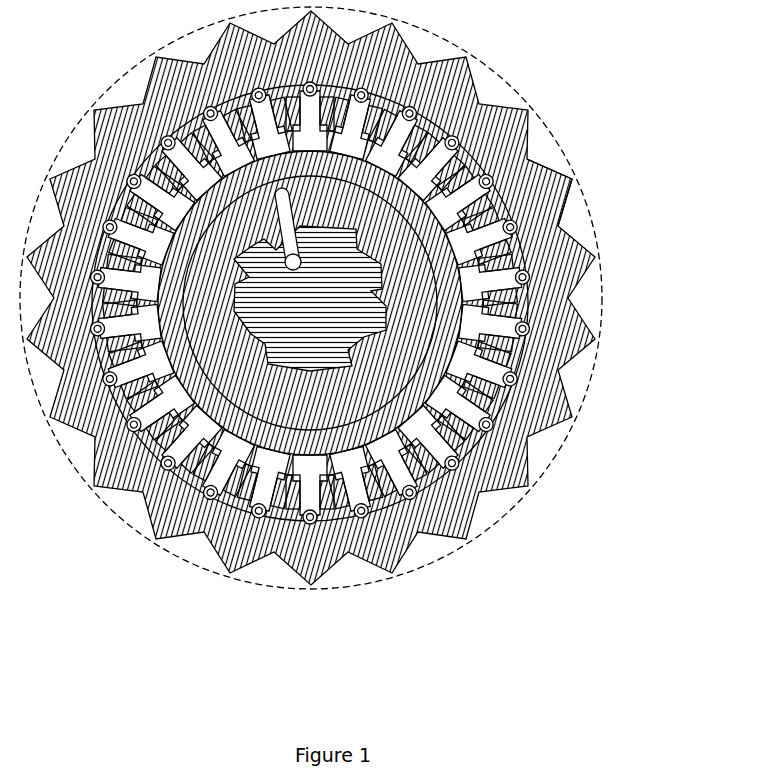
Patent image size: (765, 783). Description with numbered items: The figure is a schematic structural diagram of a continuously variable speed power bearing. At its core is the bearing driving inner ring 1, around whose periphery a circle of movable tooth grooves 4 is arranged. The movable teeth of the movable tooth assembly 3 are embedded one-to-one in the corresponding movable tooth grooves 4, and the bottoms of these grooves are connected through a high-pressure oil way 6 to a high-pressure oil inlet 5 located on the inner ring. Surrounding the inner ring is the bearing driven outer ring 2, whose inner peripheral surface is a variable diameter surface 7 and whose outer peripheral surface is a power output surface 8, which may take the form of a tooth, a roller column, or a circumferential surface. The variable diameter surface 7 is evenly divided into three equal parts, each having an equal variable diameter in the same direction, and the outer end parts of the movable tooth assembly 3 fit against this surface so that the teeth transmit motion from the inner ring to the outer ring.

The bearing driving inner ring 1 is at (475, 412).
The bearing driven outer ring 2 is at (452, 495).
The movable tooth assembly 3 is at (190, 425).
The movable tooth grooves 4 is at (255, 468).
The high-pressure oil inlet 5 is at (250, 208).
The high-pressure oil way 6 is at (132, 152).
The variable diameter surface 7 is at (555, 325).
The power output surface 8 is at (560, 205).